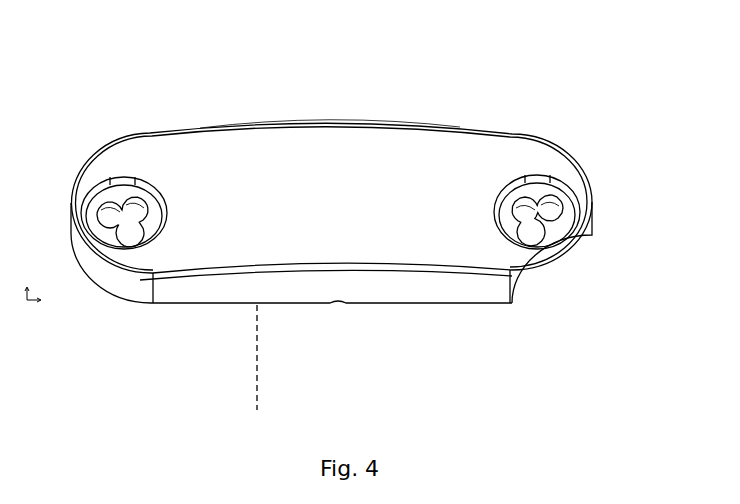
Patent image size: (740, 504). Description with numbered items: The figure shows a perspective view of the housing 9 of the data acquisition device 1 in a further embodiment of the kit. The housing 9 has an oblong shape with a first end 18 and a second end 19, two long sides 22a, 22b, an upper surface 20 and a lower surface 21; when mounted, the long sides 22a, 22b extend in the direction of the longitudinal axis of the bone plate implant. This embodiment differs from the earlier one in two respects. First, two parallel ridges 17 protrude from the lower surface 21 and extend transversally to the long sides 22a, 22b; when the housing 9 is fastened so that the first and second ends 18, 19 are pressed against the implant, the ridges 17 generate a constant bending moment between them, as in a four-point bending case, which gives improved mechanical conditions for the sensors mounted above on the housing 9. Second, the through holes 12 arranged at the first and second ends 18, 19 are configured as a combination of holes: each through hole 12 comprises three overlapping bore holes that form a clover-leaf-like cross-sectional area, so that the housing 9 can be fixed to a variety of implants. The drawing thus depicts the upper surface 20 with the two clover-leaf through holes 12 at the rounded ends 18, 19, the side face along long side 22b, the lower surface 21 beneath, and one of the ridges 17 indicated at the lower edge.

The data acquisition device 1 is at (262, 58).
The housing 9 is at (336, 121).
The through holes 12 is at (125, 220).
The ridges 17 is at (345, 306).
The first end 18 is at (102, 245).
The second end 19 is at (549, 163).
The upper surface 20 is at (397, 174).
The lower surface 21 is at (254, 377).
The long side 22a is at (209, 127).
The long side 22b is at (208, 293).